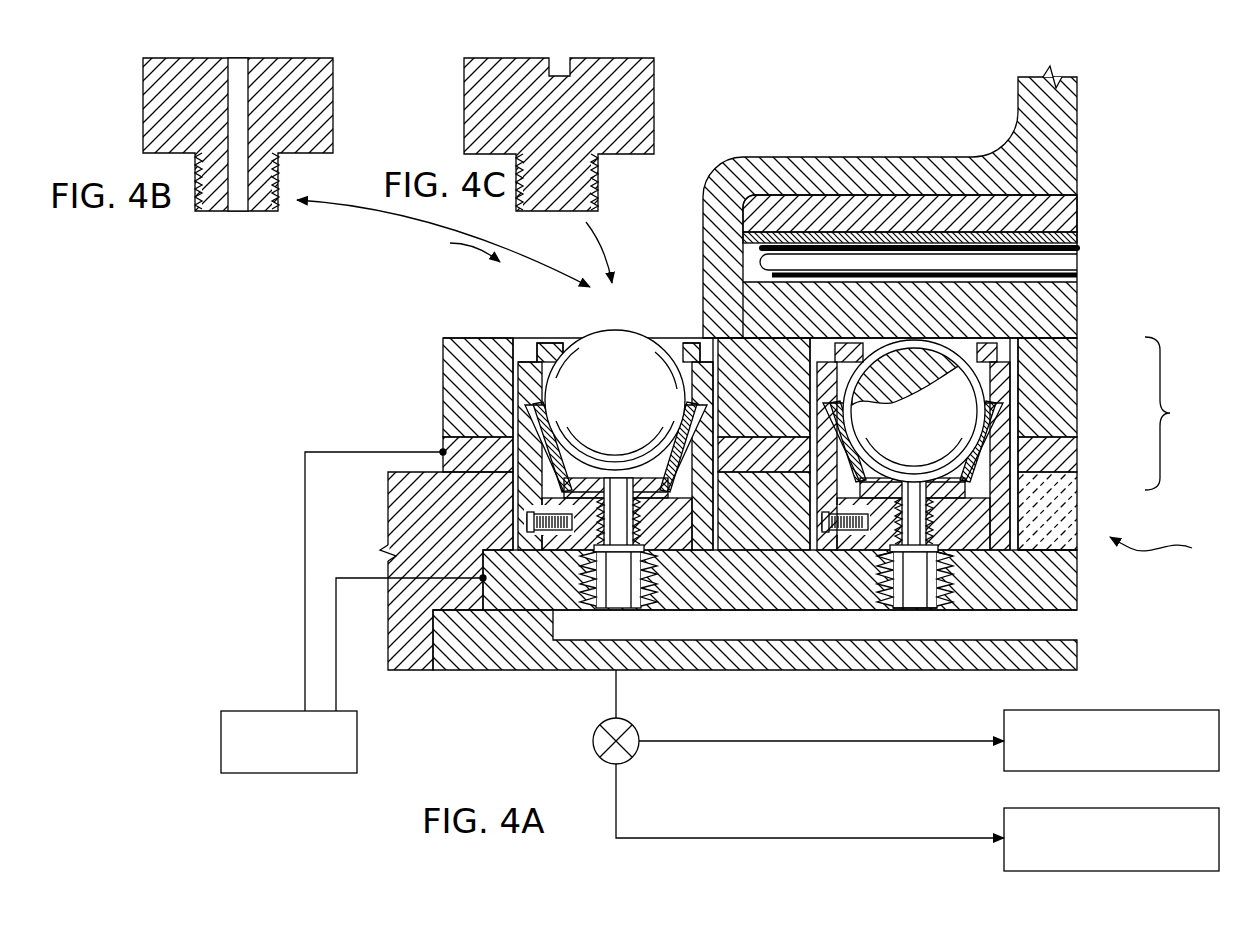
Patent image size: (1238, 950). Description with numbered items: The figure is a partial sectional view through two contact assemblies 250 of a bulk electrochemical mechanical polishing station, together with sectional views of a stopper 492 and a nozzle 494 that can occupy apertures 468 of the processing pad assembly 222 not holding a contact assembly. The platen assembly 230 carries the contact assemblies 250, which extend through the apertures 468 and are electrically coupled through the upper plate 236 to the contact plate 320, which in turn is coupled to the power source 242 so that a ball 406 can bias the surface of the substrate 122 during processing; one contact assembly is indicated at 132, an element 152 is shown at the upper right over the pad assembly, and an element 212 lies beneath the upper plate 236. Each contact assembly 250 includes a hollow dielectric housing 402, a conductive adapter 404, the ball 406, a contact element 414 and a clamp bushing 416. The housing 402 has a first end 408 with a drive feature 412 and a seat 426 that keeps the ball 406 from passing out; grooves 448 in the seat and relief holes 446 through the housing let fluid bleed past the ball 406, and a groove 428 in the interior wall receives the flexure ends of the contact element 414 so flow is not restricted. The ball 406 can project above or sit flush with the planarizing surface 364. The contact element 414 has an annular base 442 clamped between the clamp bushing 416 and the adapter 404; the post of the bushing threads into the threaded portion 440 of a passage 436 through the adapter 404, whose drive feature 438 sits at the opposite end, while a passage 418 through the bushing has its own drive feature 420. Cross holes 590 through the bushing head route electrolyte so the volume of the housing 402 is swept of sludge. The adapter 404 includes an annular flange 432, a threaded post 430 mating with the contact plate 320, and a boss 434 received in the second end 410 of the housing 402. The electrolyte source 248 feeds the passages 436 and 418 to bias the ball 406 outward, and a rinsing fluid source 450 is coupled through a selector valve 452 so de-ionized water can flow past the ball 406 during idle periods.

In FIG. 4A, the substrate 122 is at (1060, 326).
In FIG. 4A, the contact assembly 132 is at (451, 247).
In FIG. 4A, the seal ring 152 is at (803, 172).
In FIG. 4A, the base plate 212 is at (492, 672).
In FIG. 4A, the processing pad assembly 222 is at (1181, 413).
In FIG. 4A, the platen assembly 230 is at (1173, 549).
In FIG. 4A, the upper plate 236 is at (388, 498).
In FIG. 4A, the power source 242 is at (357, 737).
In FIG. 4A, the electrolyte source 248 is at (1128, 710).
In FIG. 4A, the contact assembly 250 is at (645, 327).
In FIG. 4A, the contact plate 320 is at (716, 606).
In FIG. 4A, the planarizing surface 364 is at (447, 345).
In FIG. 4A, the housing 402 is at (717, 377).
In FIG. 4A, the adapter 404 is at (585, 580).
In FIG. 4A, the ball 406 is at (617, 333).
In FIG. 4A, the first end 408 is at (679, 342).
In FIG. 4A, the second end 410 is at (707, 531).
In FIG. 4A, the drive feature 412 is at (549, 341).
In FIG. 4A, the contact element 414 is at (548, 413).
In FIG. 4A, the clamp bushing 416 is at (583, 483).
In FIG. 4A, the passage 418 is at (922, 468).
In FIG. 4A, the drive feature 420 is at (885, 548).
In FIG. 4A, the seat 426 is at (572, 352).
In FIG. 4A, the groove 428 is at (686, 388).
In FIG. 4A, the threaded post 430 is at (953, 563).
In FIG. 4A, the annular flange 432 is at (838, 538).
In FIG. 4A, the boss 434 is at (1016, 511).
In FIG. 4A, the passage 436 is at (956, 600).
In FIG. 4A, the drive feature 438 is at (897, 597).
In FIG. 4A, the threaded portion 440 is at (1016, 540).
In FIG. 4A, the annular base 442 is at (838, 520).
In FIG. 4A, the relief holes 446 is at (1040, 276).
In FIG. 4A, the grooves 448 is at (574, 342).
In FIG. 4A, the rinsing fluid source 450 is at (1128, 808).
In FIG. 4A, the selector valve 452 is at (632, 760).
In FIG. 4A, the apertures 468 is at (522, 342).
In FIG. 4C, the stopper 492 is at (654, 102).
In FIG. 4B, the nozzle 494 is at (333, 98).
In FIG. 4A, the cross holes 590 is at (647, 481).